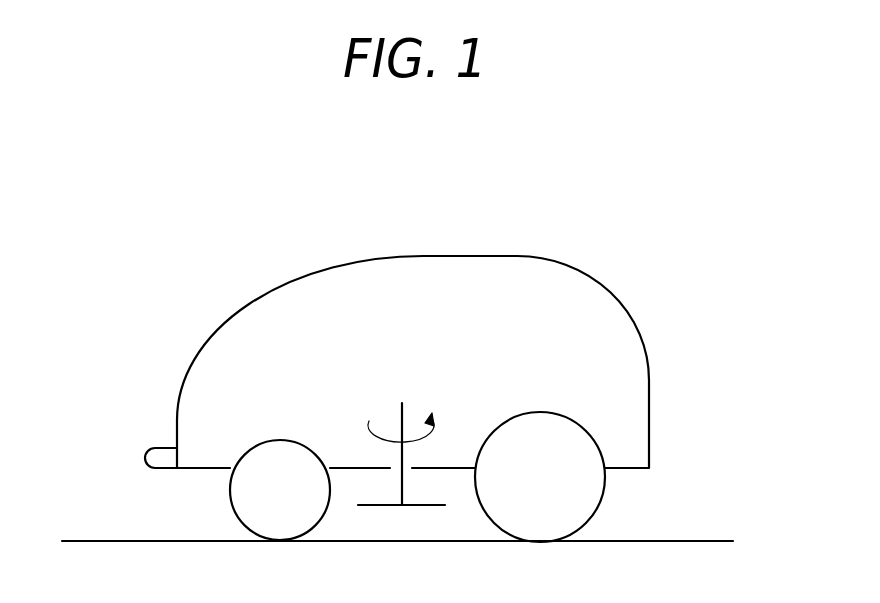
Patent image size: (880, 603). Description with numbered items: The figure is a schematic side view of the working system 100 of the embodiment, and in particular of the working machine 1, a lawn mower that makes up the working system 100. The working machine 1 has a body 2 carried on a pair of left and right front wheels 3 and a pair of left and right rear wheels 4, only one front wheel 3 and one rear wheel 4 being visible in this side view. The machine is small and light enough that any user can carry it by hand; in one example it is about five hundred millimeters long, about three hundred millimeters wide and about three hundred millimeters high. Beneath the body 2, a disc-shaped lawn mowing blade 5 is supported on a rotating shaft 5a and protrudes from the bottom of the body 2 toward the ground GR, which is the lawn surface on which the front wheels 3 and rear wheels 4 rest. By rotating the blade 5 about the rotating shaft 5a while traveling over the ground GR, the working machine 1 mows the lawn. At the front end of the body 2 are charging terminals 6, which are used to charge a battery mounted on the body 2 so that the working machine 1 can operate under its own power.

The working system 100 is at (651, 277).
The working machine 1 is at (420, 256).
The body 2 is at (538, 256).
The front wheels 3 is at (283, 524).
The rear wheels 4 is at (543, 525).
The lawn mowing blade 5 is at (383, 507).
The rotating shaft 5a is at (400, 458).
The charging terminals 6 is at (163, 448).
The ground GR is at (703, 540).